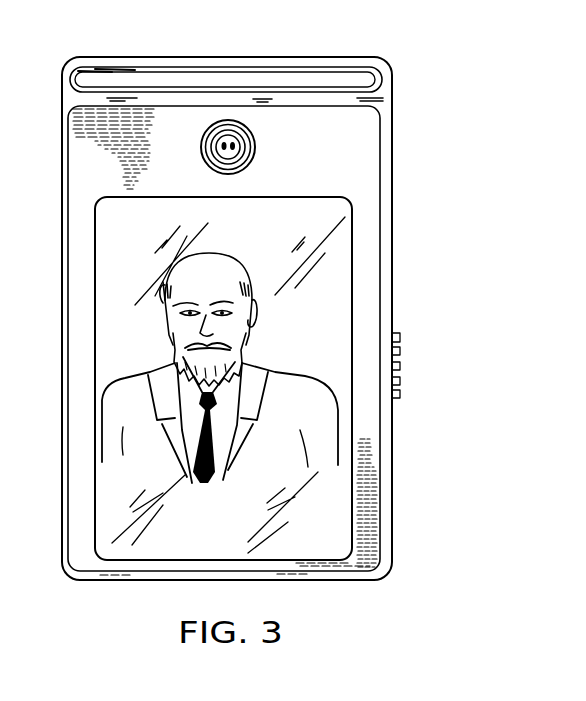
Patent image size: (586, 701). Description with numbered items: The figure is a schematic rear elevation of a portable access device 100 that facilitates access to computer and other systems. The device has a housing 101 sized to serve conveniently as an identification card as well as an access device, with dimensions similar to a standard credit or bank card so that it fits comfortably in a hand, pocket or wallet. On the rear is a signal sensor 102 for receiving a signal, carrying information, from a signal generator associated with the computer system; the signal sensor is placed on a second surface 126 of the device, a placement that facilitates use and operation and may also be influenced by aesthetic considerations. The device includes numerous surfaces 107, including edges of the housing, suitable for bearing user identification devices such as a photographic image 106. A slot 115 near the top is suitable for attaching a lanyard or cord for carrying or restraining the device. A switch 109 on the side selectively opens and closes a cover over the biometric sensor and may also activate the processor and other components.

The portable access device 100 is at (427, 221).
The housing 101 is at (358, 148).
The signal sensor 102 is at (227, 120).
The photographic image 106 is at (333, 313).
The surfaces 107 is at (193, 118).
The switch 109 is at (400, 383).
The slot 115 is at (107, 82).
The second surface 126 is at (323, 170).